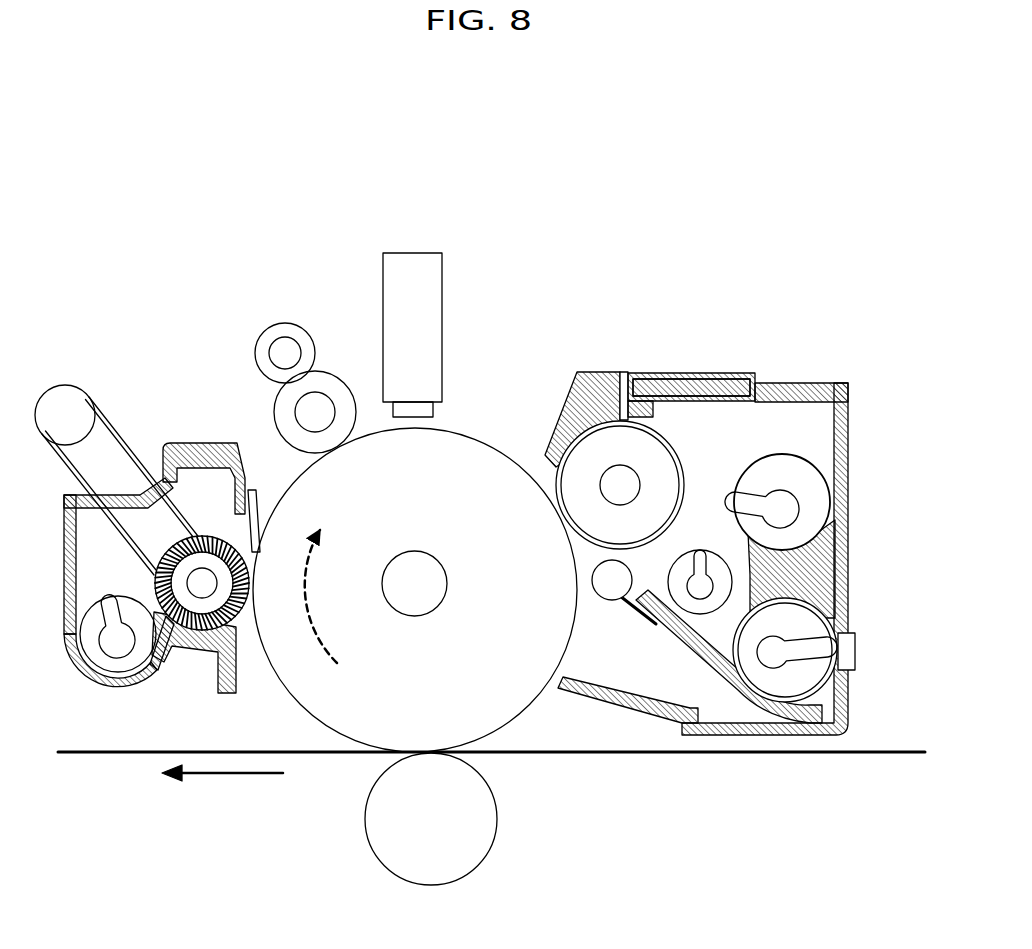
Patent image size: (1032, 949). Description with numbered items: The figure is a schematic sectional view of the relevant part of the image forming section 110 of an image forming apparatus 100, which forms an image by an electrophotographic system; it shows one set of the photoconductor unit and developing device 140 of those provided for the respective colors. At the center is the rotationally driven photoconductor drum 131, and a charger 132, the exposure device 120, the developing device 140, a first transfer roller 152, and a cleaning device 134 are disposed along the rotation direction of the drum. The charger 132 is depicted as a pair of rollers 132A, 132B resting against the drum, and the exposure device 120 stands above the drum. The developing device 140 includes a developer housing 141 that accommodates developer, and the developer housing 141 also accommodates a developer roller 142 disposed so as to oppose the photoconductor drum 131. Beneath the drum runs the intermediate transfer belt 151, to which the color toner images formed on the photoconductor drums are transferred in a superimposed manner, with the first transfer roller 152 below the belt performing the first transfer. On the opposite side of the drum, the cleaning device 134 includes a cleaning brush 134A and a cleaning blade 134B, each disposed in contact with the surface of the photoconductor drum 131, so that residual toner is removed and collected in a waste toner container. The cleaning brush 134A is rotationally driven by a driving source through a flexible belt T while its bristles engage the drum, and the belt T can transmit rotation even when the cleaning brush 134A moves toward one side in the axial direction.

The image forming apparatus 100 is at (178, 210).
The image forming section 110 is at (525, 312).
The exposure device 120 is at (415, 332).
The photoconductor drum 131 is at (447, 519).
The charger 132 is at (333, 356).
The cleaning roller 132A is at (272, 395).
The collecting roller 132B is at (281, 330).
The cleaning device 134 is at (178, 426).
The cleaning brush 134A is at (198, 612).
The cleaning blade 134B is at (223, 442).
The developing device 140 is at (768, 366).
The developer housing 141 is at (817, 385).
The developer roller 142 is at (573, 432).
The intermediate transfer belt 151 is at (615, 754).
The first transfer roller 152 is at (462, 828).
The belt T is at (73, 478).